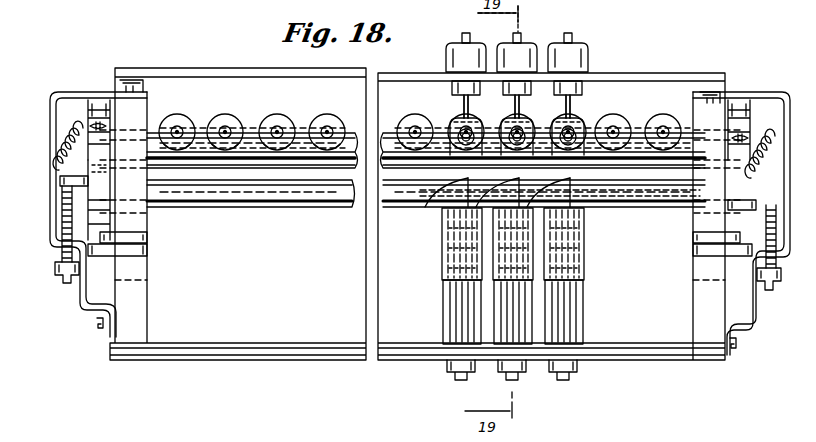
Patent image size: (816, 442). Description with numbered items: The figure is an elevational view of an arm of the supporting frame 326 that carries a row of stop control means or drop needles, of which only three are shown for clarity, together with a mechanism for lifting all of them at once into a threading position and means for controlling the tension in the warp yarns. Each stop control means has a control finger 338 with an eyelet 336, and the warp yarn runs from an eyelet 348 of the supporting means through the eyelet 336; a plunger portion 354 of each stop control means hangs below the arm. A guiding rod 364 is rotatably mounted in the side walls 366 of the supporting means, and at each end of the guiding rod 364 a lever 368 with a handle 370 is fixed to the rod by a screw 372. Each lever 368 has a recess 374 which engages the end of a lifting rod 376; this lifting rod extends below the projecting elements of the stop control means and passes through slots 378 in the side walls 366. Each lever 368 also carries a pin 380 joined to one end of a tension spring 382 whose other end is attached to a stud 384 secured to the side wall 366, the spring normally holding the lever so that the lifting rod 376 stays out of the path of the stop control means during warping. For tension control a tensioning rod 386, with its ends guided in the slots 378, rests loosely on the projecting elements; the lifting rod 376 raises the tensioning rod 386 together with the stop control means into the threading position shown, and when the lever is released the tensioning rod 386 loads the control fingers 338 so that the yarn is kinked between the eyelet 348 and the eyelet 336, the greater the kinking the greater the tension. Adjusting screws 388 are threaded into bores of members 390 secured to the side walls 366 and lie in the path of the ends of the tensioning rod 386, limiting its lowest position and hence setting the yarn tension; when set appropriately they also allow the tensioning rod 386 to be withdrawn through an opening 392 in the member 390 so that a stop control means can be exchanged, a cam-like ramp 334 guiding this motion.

The frame 326 is at (240, 362).
The cam ramp 334 is at (450, 198).
The eyelet 336 is at (560, 118).
The control finger 338 is at (516, 112).
The eyelet of the supporting means 348 is at (228, 117).
The plunger cylinder 354 is at (462, 255).
The guiding rod 364 is at (300, 148).
The side wall 366 is at (108, 238).
The lever 368 is at (62, 230).
The handle 370 is at (135, 250).
The screw 372 is at (107, 122).
The recess 374 is at (118, 224).
The lifting rod 376 is at (305, 200).
The slot 378 is at (140, 280).
The pin 380 is at (60, 180).
The tension spring 382 is at (68, 128).
The stud 384 is at (84, 105).
The tensioning rod 386 is at (256, 166).
The adjusting screw 388 is at (56, 258).
The member 390 is at (80, 310).
The opening 392 is at (79, 216).